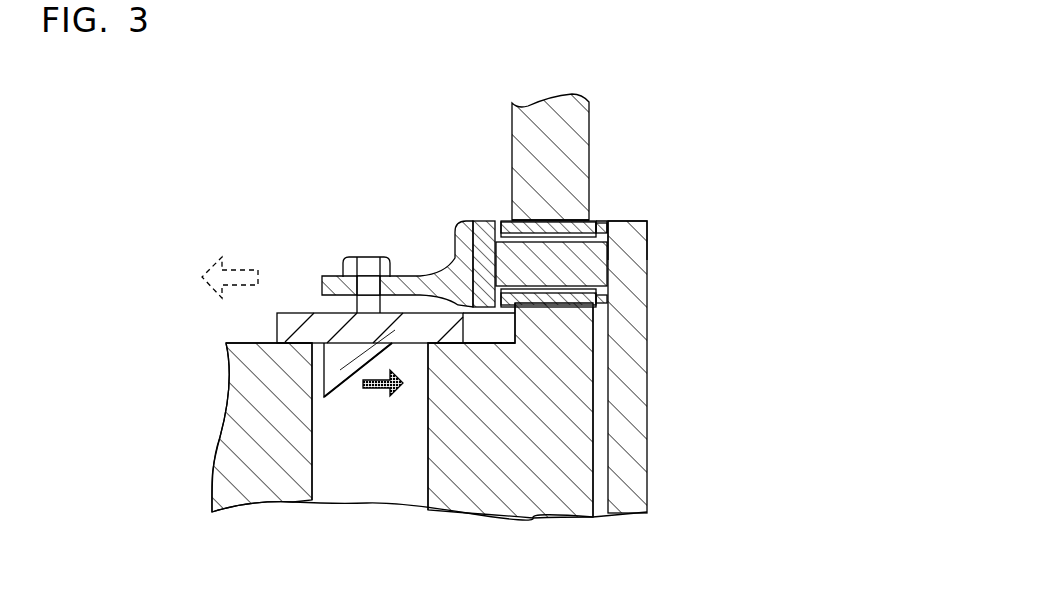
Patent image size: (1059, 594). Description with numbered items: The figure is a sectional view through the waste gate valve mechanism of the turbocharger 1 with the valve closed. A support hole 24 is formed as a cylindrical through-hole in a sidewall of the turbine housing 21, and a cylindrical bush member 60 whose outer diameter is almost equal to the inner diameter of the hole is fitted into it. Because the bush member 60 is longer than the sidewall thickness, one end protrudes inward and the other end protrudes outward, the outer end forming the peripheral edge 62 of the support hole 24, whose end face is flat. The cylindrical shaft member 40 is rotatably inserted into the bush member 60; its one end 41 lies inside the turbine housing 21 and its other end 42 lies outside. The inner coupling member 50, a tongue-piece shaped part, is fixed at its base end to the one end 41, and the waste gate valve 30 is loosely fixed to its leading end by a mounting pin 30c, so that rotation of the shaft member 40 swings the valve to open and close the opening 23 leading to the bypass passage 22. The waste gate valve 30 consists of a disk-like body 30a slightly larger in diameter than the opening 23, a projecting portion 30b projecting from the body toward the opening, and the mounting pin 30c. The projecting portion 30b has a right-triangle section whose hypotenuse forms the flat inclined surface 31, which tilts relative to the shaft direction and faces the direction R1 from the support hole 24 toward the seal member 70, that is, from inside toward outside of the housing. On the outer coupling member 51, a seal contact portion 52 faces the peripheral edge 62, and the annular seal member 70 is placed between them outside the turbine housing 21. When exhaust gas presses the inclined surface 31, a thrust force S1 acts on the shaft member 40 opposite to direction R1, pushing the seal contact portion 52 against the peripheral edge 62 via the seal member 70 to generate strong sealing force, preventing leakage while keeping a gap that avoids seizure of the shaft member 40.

The turbocharger 1 is at (657, 108).
The turbine housing 21 is at (535, 114).
The bypass passage 22 is at (487, 160).
The opening 23 is at (362, 433).
The support hole 24 is at (528, 220).
The waste gate valve 30 is at (378, 152).
The body 30a is at (284, 320).
The projecting portion 30b is at (335, 368).
The mounting pin 30c is at (369, 267).
The inclined surface 31 is at (343, 378).
The shaft member 40 is at (586, 272).
The one end 41 is at (490, 221).
The other end 42 is at (612, 283).
The inner coupling member 50 is at (447, 280).
The outer coupling member 51 is at (640, 463).
The seal contact portion 52 is at (612, 236).
The bush member 60 is at (565, 226).
The peripheral edge 62 is at (600, 223).
The seal member 70 is at (600, 220).
The thrust force S1 is at (210, 268).
The direction R1 is at (398, 398).